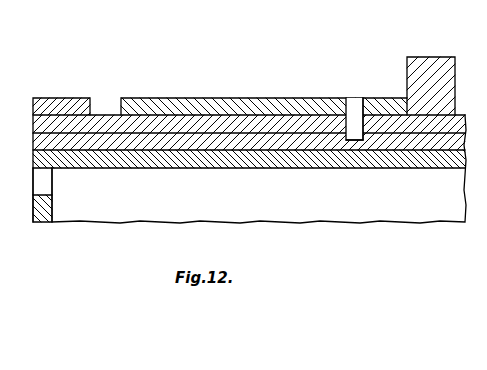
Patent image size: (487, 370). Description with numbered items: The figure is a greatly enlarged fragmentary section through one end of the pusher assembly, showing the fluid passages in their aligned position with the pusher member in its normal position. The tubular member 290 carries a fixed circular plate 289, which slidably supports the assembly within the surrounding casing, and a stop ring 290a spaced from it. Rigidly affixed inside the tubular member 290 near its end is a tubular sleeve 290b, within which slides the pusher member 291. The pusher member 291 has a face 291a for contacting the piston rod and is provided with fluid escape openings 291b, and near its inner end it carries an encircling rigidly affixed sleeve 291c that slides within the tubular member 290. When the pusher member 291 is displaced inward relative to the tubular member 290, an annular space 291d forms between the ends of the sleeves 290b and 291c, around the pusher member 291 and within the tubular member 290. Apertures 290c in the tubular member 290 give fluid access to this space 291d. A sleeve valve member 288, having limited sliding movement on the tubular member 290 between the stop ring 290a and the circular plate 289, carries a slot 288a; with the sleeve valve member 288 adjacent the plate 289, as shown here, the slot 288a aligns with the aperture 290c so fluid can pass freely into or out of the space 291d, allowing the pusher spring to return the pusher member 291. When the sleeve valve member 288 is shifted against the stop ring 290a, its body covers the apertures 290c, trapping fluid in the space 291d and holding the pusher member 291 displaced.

The sleeve valve member 288 is at (200, 98).
The slot 288a is at (350, 98).
The circular plate 289 is at (416, 57).
The tubular member 290 is at (327, 127).
The stop ring 290a is at (77, 74).
The tubular sleeve 290b is at (264, 142).
The aperture 290c is at (363, 117).
The pusher member 291 is at (188, 155).
The face 291a is at (33, 212).
The fluid escape opening 291b is at (48, 186).
The sleeve 291c is at (403, 143).
The annular space 291d is at (351, 141).